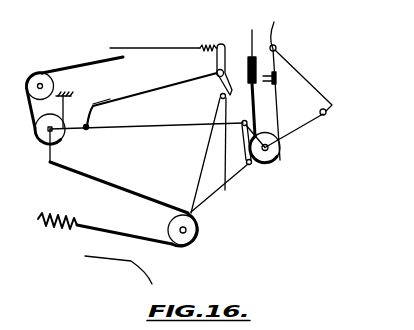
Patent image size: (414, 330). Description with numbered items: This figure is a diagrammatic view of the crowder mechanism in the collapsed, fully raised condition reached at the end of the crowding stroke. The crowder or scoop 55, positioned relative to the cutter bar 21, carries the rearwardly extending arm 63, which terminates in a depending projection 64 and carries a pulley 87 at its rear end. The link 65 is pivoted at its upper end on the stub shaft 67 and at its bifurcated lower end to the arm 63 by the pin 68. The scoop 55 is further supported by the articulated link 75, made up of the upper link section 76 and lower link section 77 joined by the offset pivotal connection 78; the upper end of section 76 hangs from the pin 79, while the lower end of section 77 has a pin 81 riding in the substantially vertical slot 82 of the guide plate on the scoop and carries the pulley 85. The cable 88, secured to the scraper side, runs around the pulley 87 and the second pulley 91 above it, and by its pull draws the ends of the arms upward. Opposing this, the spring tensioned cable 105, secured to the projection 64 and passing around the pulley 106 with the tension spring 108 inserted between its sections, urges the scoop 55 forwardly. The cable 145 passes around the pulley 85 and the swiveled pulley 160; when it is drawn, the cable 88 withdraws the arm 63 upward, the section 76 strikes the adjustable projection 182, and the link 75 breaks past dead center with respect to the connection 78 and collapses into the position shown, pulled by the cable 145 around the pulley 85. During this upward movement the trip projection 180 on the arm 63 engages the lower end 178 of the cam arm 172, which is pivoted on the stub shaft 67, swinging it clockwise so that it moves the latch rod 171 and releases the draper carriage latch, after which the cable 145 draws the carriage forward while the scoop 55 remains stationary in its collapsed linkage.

The cutter bar 21 is at (151, 286).
The crowder 55 is at (214, 190).
The arm 63 is at (178, 125).
The depending projection 64 is at (48, 158).
The link 65 is at (171, 84).
The stub shaft 67 is at (215, 73).
The pin 68 is at (87, 129).
The articulated link 75 is at (333, 96).
The link section 76 is at (315, 86).
The link section 77 is at (306, 126).
The offset pivotal connection 78 is at (326, 113).
The pin 79 is at (277, 48).
The pin 81 is at (254, 122).
The slot 82 is at (249, 165).
The pulley 85 is at (277, 157).
The pulley 87 is at (42, 132).
The cable 88 is at (28, 119).
The second pulley 91 is at (53, 58).
The spring tensioned cable 105 is at (162, 188).
The pulley 106 is at (196, 241).
The tension spring 108 is at (52, 213).
The cable 145 is at (265, 85).
The pulley 160 is at (256, 48).
The latch rod 171 is at (162, 47).
The cam arm 172 is at (227, 42).
The lower end 178 is at (221, 95).
The projection 180 is at (221, 99).
The projection 182 is at (276, 76).